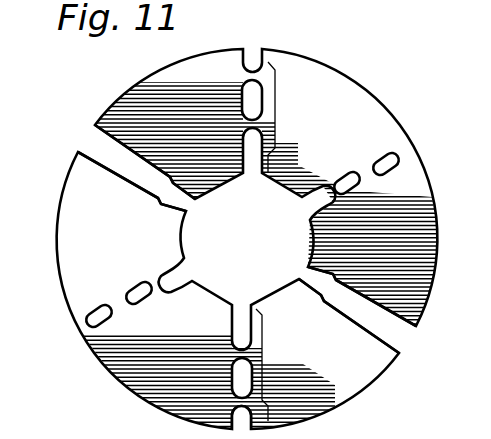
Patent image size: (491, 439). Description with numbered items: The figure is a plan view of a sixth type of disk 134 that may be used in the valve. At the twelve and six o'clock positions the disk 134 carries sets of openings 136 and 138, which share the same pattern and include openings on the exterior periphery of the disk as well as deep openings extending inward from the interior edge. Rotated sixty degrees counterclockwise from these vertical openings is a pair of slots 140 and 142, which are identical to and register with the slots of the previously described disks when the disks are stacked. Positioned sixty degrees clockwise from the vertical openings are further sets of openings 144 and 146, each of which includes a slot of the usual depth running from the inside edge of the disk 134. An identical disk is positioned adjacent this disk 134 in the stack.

The disk 134 is at (362, 77).
The set of openings 136 is at (275, 97).
The set of openings 138 is at (262, 345).
The slot 140 is at (86, 153).
The slot 142 is at (383, 338).
The set of openings 144 is at (344, 166).
The set of openings 146 is at (165, 265).